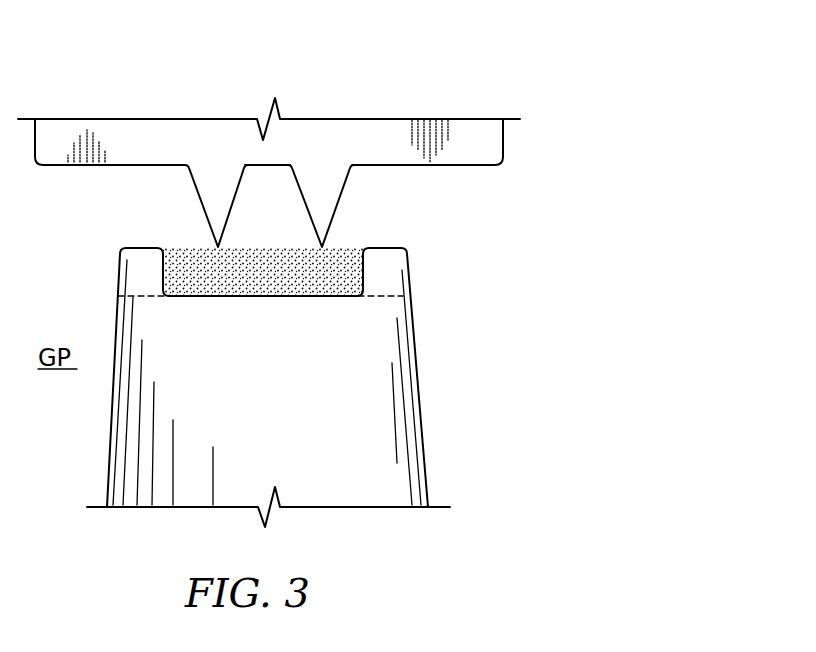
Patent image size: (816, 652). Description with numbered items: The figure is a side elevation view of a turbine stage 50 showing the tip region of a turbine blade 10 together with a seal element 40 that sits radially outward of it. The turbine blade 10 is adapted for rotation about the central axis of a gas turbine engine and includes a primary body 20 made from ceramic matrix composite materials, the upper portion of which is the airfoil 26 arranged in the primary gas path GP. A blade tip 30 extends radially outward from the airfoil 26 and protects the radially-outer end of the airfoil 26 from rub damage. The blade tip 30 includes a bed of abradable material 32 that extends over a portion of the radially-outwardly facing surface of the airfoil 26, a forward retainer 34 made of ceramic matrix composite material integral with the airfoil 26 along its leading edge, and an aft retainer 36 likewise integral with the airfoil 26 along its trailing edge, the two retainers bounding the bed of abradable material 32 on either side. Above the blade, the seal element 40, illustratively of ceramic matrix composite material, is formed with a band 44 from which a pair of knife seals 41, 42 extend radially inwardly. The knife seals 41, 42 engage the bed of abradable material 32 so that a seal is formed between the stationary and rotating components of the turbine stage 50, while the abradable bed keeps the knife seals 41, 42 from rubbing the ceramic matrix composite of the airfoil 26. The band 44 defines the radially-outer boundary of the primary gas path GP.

The turbine stage 50 is at (680, 124).
The seal element 40 is at (522, 123).
The band 44 is at (472, 150).
The knife seal 41 is at (183, 196).
The knife seal 42 is at (302, 233).
The turbine blade 10 is at (480, 319).
The blade tip 30 is at (426, 266).
The forward retainer 34 is at (131, 250).
The aft retainer 36 is at (393, 238).
The bed of abradable material 32 is at (350, 252).
The primary body 20 is at (451, 468).
The airfoil 26 is at (415, 443).